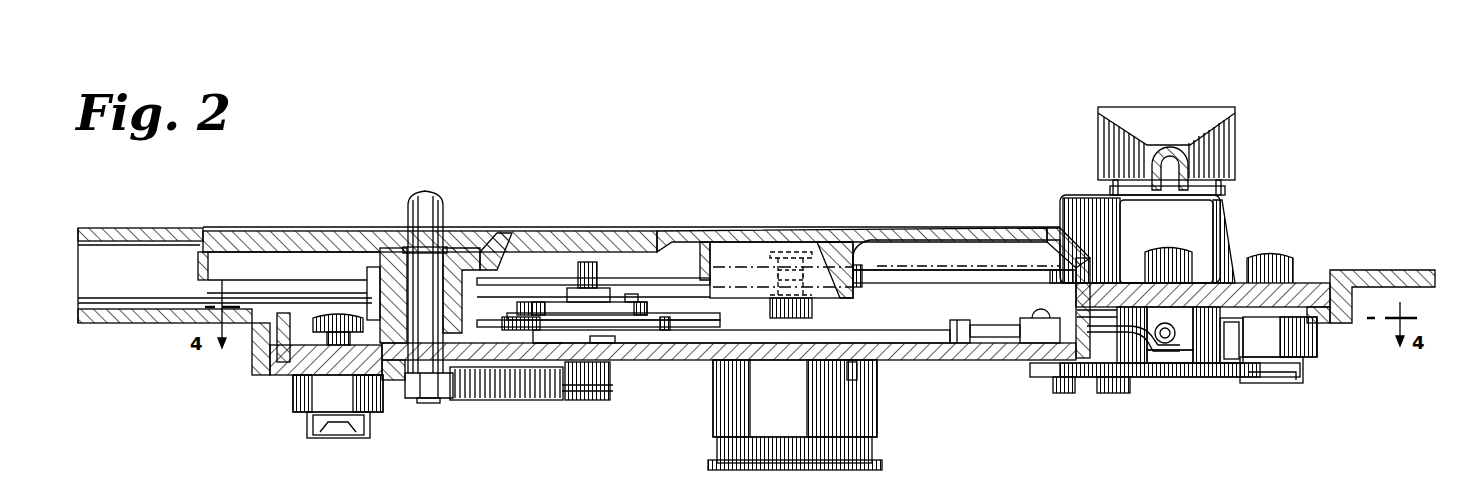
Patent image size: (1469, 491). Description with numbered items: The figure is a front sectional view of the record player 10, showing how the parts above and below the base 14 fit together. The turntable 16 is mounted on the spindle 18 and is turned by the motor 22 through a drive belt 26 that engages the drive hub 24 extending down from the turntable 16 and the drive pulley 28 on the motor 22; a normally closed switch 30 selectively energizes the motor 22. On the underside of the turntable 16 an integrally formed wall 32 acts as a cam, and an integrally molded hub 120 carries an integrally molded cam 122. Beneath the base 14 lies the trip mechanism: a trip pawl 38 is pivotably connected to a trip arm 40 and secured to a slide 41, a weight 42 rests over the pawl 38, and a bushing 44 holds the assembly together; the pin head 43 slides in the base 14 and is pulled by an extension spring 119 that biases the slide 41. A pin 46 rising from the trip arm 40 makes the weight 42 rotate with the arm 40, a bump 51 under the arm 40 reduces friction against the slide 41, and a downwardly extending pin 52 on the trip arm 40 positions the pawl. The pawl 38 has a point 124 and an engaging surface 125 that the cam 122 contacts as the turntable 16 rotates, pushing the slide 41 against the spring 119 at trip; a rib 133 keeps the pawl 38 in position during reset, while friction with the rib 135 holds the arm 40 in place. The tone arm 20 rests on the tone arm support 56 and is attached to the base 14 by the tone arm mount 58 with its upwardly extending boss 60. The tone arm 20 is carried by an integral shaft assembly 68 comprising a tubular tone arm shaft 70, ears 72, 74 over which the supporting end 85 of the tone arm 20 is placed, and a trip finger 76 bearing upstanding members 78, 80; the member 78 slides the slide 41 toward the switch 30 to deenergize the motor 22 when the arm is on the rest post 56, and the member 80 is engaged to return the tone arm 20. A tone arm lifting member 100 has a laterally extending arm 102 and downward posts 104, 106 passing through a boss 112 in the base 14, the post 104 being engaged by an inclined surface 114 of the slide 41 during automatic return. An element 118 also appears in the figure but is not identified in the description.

The record player 10 is at (376, 156).
The base 14 is at (890, 360).
The turntable 16 is at (148, 228).
The spindle 18 is at (432, 200).
The tone arm 20 is at (1240, 140).
The turntable driving motor 22 is at (713, 403).
The drive hub 24 is at (833, 250).
The drive belt 26 is at (858, 265).
The drive pulley 28 is at (770, 252).
The normally closed switch 30 is at (983, 337).
The wall 32 is at (190, 263).
The trip pawl 38 is at (500, 297).
The trip arm 40 is at (713, 313).
The slide 41 is at (680, 327).
The weight 42 is at (547, 297).
The head 43 is at (613, 378).
The bushing 44 is at (599, 262).
The pin 46 is at (633, 292).
The bump 51 is at (600, 348).
The downwardly extending pin 52 is at (855, 378).
The tone arm support 56 is at (548, 417).
The tone arm mount 58 is at (1265, 214).
The boss 60 is at (1232, 210).
The shaft assembly 68 is at (1098, 313).
The tone arm shaft 70 is at (1117, 350).
The ear 72 is at (1105, 185).
The ear 74 is at (1222, 190).
The trip finger 76 is at (1045, 377).
The upstanding member 78 is at (1163, 362).
The upstanding member 80 is at (1245, 337).
The supporting end 85 is at (1145, 107).
The tone arm lifting member 100 is at (1063, 212).
The laterally extending arm 102 is at (1160, 247).
The post 104 is at (1175, 343).
The post 106 is at (1182, 310).
The boss 112 is at (1236, 262).
The inclined surface 114 is at (1150, 360).
The block 118 is at (953, 343).
The extension spring 119 is at (500, 398).
The hub 120 is at (490, 252).
The cam 122 is at (365, 272).
The point 124 is at (380, 247).
The engaging surface 125 is at (350, 297).
The rib 133 is at (520, 305).
The rib 135 is at (890, 328).